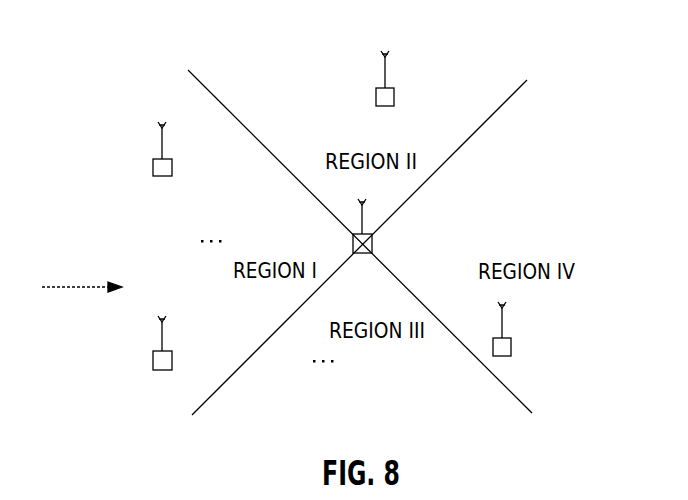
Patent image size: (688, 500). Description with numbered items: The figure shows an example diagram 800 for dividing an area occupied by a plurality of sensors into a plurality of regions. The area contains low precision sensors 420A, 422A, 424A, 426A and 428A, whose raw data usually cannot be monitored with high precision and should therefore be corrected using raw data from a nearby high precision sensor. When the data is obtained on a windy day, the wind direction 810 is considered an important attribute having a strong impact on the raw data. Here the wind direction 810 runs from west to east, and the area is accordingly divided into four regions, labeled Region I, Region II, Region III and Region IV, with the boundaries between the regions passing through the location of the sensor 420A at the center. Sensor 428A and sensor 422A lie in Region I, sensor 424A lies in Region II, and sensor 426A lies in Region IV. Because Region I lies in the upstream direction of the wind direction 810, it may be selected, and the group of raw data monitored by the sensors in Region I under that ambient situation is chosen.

The example diagram 800 is at (249, 15).
The wind direction 810 is at (70, 286).
The sensor 420A is at (373, 240).
The sensor 422A is at (173, 352).
The sensor 424A is at (395, 89).
The sensor 426A is at (512, 339).
The sensor 428A is at (173, 160).